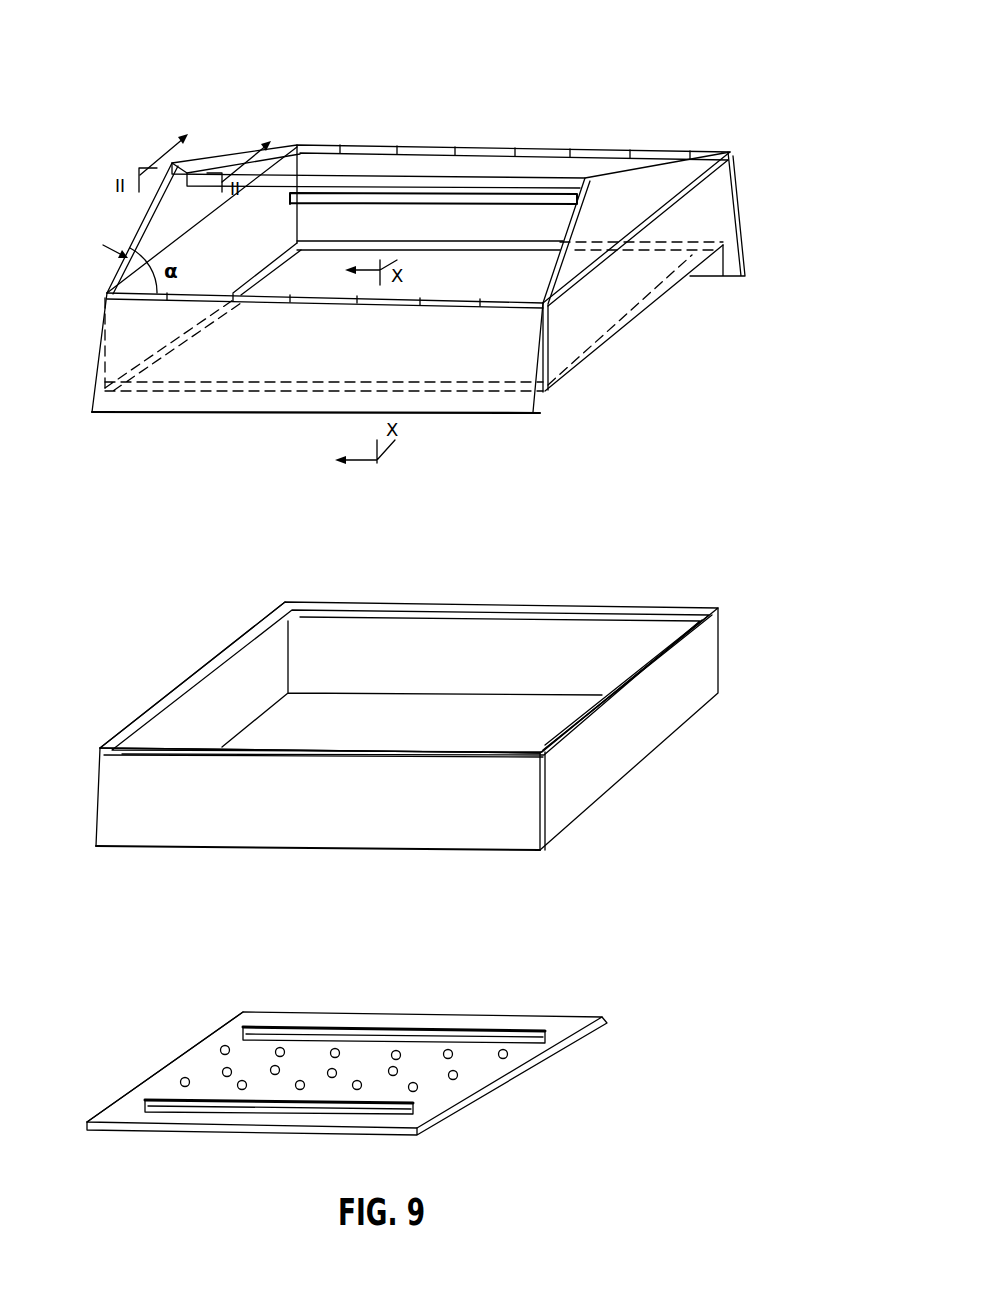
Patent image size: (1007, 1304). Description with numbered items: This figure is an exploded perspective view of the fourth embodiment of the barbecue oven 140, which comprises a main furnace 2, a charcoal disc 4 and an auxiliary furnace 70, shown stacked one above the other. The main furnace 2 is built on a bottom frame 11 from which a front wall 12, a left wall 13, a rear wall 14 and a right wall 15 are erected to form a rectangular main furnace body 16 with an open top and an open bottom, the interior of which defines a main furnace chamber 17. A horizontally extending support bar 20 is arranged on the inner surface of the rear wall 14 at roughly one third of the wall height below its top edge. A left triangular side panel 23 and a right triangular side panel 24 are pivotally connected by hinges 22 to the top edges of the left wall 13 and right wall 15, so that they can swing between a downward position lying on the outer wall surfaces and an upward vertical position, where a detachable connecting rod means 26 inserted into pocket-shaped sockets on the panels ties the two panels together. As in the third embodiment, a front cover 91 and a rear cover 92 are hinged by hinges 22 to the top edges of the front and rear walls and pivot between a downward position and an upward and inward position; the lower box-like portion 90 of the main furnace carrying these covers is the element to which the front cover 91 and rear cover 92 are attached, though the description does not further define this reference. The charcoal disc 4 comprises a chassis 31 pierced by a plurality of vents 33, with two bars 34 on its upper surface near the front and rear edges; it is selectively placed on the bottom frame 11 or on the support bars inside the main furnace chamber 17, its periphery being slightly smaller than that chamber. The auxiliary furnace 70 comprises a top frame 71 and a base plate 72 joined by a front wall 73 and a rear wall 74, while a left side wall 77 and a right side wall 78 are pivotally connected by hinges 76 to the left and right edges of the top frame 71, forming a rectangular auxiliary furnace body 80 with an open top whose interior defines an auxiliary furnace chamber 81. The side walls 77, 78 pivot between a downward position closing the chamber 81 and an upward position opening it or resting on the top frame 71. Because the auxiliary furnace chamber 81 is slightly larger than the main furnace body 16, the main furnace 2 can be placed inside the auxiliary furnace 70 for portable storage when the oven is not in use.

The barbecue oven 140 is at (742, 126).
The main furnace 2 is at (592, 146).
The connecting rod means 26 is at (339, 165).
The support bar 20 is at (522, 196).
The rear wall 14 is at (465, 232).
The bottom frame 11 is at (283, 256).
The right triangular side panel 24 is at (643, 197).
The hinge 22 is at (673, 217).
The left triangular side panel 23 is at (172, 208).
The left wall 13 is at (224, 264).
The front wall 12 is at (424, 357).
The main furnace chamber 17 is at (527, 283).
The right wall 15 is at (612, 312).
The main furnace body 16 is at (568, 340).
The rear cover 92 is at (723, 264).
The front cover 91 is at (108, 402).
The housing box 90 is at (268, 303).
The auxiliary furnace 70 is at (628, 604).
The top frame 71 is at (530, 610).
The rear wall 74 is at (400, 654).
The base plate 72 is at (434, 715).
The left side wall 77 is at (181, 711).
The auxiliary furnace body 80 is at (118, 812).
The front wall 73 is at (368, 790).
The auxiliary furnace chamber 81 is at (288, 730).
The right side wall 78 is at (617, 747).
The hinge 76 is at (650, 672).
The charcoal disc 4 is at (570, 1012).
The chassis 31 is at (208, 1060).
The bar 34 is at (386, 1033).
The vent 33 is at (508, 1054).